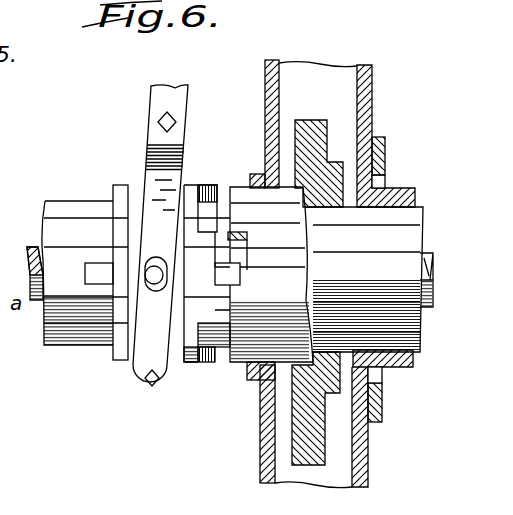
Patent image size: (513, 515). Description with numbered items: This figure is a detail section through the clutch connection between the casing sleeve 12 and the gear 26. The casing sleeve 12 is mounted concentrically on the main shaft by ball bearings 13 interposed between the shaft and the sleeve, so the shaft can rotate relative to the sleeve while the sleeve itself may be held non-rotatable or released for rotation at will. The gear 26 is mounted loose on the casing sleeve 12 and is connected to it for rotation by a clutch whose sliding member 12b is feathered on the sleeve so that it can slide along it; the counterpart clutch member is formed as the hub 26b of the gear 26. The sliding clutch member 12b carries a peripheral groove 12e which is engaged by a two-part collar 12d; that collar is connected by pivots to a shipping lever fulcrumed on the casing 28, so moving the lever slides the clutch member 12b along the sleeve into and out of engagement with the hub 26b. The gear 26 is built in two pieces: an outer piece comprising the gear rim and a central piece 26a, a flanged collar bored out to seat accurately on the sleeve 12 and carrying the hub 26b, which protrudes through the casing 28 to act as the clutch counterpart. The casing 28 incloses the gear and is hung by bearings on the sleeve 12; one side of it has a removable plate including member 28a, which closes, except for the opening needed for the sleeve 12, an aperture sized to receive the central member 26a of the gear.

The casing sleeve 12 is at (52, 200).
The sliding clutch member 12b is at (185, 365).
The two-part collar 12d is at (128, 365).
The peripheral groove 12e is at (132, 182).
The ball bearings 13 is at (27, 250).
The gear 26 is at (305, 120).
The central piece 26a is at (383, 377).
The hub 26b is at (240, 187).
The casing 28 is at (265, 72).
The removable plate member 28a is at (375, 425).